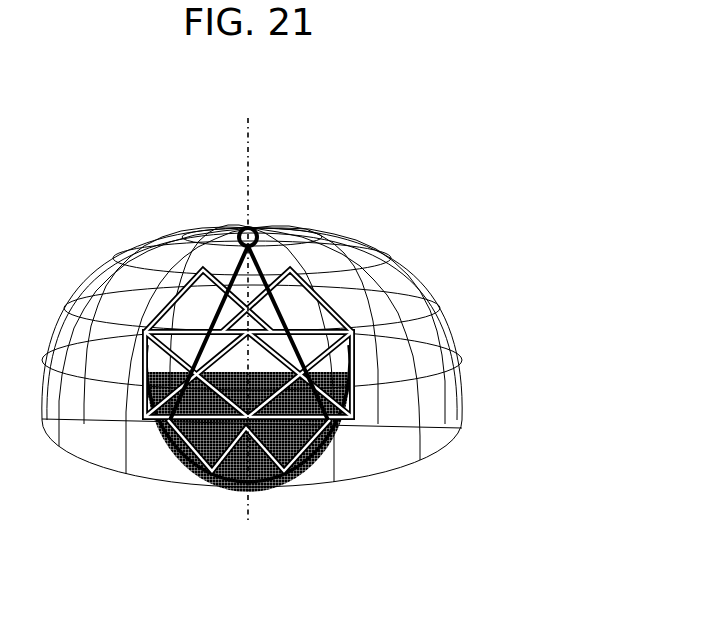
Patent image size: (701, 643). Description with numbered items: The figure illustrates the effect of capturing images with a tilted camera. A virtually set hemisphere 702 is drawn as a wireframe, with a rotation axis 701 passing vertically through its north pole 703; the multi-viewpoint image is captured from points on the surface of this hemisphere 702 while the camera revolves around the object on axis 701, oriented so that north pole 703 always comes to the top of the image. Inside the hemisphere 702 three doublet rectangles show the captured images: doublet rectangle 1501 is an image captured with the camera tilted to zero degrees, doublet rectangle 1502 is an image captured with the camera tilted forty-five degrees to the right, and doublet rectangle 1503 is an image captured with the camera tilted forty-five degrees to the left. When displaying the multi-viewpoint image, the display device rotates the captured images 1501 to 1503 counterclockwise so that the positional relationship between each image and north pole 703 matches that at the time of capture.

The axis 701 is at (249, 121).
The hemisphere 702 is at (410, 292).
The north pole 703 is at (257, 229).
The doublet rectangle 1501 is at (350, 380).
The doublet rectangle 1502 is at (330, 462).
The doublet rectangle 1503 is at (158, 430).